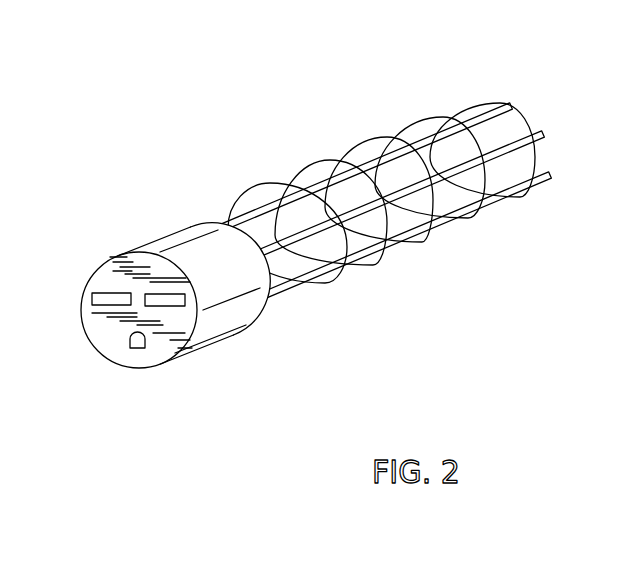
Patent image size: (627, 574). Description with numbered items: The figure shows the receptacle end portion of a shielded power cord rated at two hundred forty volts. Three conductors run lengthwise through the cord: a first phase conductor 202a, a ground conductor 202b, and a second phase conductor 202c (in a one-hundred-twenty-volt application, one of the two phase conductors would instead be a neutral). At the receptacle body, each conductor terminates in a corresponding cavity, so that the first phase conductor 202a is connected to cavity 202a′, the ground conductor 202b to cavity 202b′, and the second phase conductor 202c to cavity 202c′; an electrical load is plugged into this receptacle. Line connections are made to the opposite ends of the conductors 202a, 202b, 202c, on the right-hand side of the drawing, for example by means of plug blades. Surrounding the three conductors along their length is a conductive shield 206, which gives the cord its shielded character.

The first phase conductor 202a is at (550, 178).
The ground conductor 202b is at (546, 133).
The second phase conductor 202c is at (512, 106).
The conductive shield 206 is at (418, 246).
The cavity 202a′ is at (173, 303).
The cavity 202b′ is at (137, 349).
The cavity 202c′ is at (100, 293).